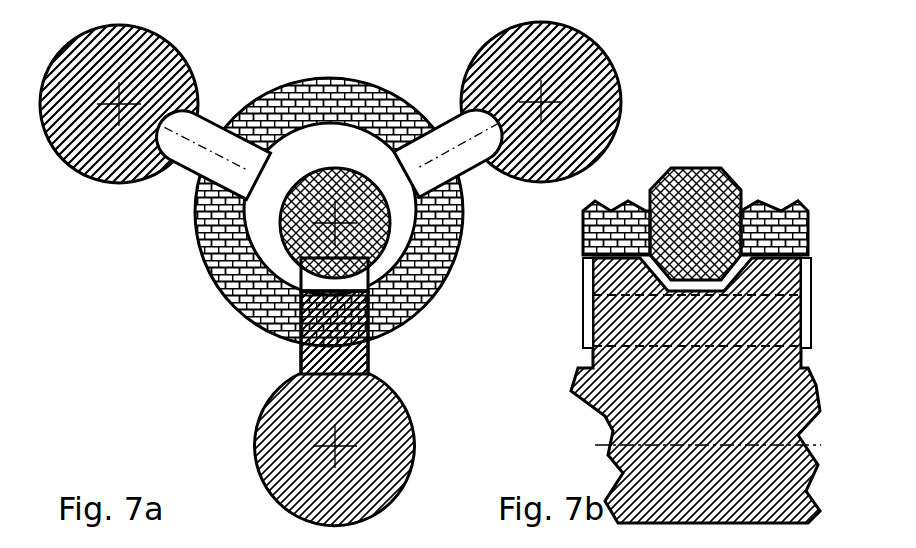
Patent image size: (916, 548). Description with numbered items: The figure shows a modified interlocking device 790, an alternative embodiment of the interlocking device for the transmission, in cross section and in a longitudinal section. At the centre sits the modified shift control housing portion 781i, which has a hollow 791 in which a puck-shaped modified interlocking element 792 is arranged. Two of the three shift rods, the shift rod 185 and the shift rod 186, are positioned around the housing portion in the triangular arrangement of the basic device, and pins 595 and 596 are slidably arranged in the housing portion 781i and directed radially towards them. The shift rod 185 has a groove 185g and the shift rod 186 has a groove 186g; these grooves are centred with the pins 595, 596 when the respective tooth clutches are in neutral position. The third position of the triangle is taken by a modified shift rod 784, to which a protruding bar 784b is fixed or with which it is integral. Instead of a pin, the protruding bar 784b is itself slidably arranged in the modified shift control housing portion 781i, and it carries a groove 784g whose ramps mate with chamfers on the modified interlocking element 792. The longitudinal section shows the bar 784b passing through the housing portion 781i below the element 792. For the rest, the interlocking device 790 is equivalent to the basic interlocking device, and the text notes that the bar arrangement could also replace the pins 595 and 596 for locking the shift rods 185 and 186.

In FIG. 7a, the shift rod 185 is at (168, 40).
In FIG. 7a, the shift rod 186 is at (612, 80).
In FIG. 7a, the groove 185g is at (140, 155).
In FIG. 7a, the groove 186g is at (462, 90).
In FIG. 7a, the pin 595 is at (190, 152).
In FIG. 7a, the pin 596 is at (457, 123).
In FIG. 7a, the modified interlocking device 790 is at (145, 352).
In FIG. 7a, the hollow 791 is at (393, 230).
In FIG. 7b, the hollow 791 is at (638, 228).
In FIG. 7a, the modified interlocking element 792 is at (362, 206).
In FIG. 7b, the modified interlocking element 792 is at (677, 203).
In FIG. 7a, the modified shift control housing portion 781i is at (443, 275).
In FIG. 7b, the modified shift control housing portion 781i is at (572, 305).
In FIG. 7a, the modified shift rod 784 is at (377, 430).
In FIG. 7b, the modified shift rod 784 is at (625, 448).
In FIG. 7a, the protruding bar 784b is at (343, 340).
In FIG. 7b, the protruding bar 784b is at (503, 400).
In FIG. 7a, the groove 784g is at (338, 285).
In FIG. 7b, the groove 784g is at (473, 345).